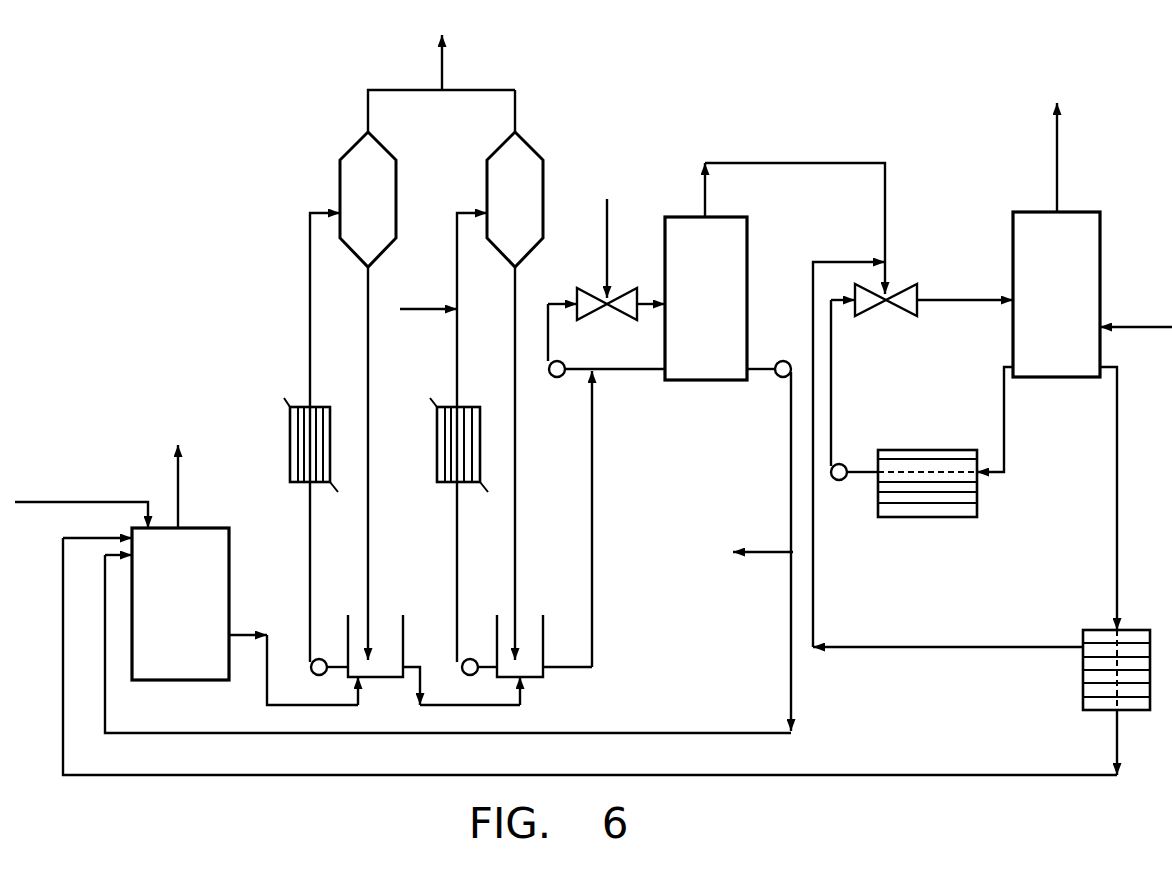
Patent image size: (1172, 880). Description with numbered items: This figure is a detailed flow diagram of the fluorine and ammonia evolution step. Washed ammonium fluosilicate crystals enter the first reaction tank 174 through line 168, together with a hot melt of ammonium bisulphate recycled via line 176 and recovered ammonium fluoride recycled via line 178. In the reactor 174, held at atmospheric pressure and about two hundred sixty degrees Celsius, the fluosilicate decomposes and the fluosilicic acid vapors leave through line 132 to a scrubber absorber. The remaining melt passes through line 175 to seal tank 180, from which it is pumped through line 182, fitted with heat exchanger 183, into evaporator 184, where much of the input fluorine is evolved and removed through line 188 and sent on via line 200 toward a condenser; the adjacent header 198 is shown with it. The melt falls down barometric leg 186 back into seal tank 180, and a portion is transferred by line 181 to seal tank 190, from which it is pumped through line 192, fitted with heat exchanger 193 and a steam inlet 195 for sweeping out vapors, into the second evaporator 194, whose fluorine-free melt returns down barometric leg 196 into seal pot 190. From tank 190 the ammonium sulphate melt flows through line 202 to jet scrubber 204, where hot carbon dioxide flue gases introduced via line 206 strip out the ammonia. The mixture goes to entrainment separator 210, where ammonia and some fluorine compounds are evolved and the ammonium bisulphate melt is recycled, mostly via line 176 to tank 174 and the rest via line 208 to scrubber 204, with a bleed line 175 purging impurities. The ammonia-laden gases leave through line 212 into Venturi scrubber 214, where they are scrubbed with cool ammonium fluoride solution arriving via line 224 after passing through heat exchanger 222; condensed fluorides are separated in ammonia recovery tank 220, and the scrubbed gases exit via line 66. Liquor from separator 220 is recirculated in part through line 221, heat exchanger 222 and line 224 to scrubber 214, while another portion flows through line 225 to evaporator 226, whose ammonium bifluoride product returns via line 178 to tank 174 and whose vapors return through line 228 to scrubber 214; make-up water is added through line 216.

The line 66 is at (1056, 139).
The line 132 is at (180, 483).
The line 168 is at (108, 502).
The first reaction tank 174 is at (180, 604).
The line 175 is at (245, 635).
The line 176 is at (105, 632).
The line 178 is at (63, 620).
The seal tank 180 is at (404, 622).
The line 181 is at (502, 705).
The line 182 is at (308, 526).
The heat exchanger 183 is at (330, 406).
The evaporator 184 is at (398, 180).
The barometric leg 186 is at (370, 528).
The line 188 is at (366, 100).
The seal tank 190 is at (544, 622).
The line 192 is at (458, 540).
The heat exchanger 193 is at (470, 406).
The evaporator 194 is at (545, 168).
The steam inlet 195 is at (424, 309).
The barometric leg 196 is at (516, 472).
The line 198 is at (517, 105).
The line 200 is at (440, 60).
The line 202 is at (593, 570).
The jet scrubber 204 is at (584, 292).
The line 206 is at (608, 222).
The line 208 is at (627, 371).
The entrainment separator 210 is at (706, 298).
The line 212 is at (802, 163).
The Venturi scrubber 214 is at (910, 292).
The line 216 is at (1145, 329).
The ammonia recovery tank 220 is at (1056, 294).
The line 221 is at (1005, 412).
The heat exchanger 222 is at (978, 508).
The line 224 is at (832, 412).
The line 225 is at (1118, 505).
The evaporator 226 is at (1082, 700).
The line 228 is at (932, 647).